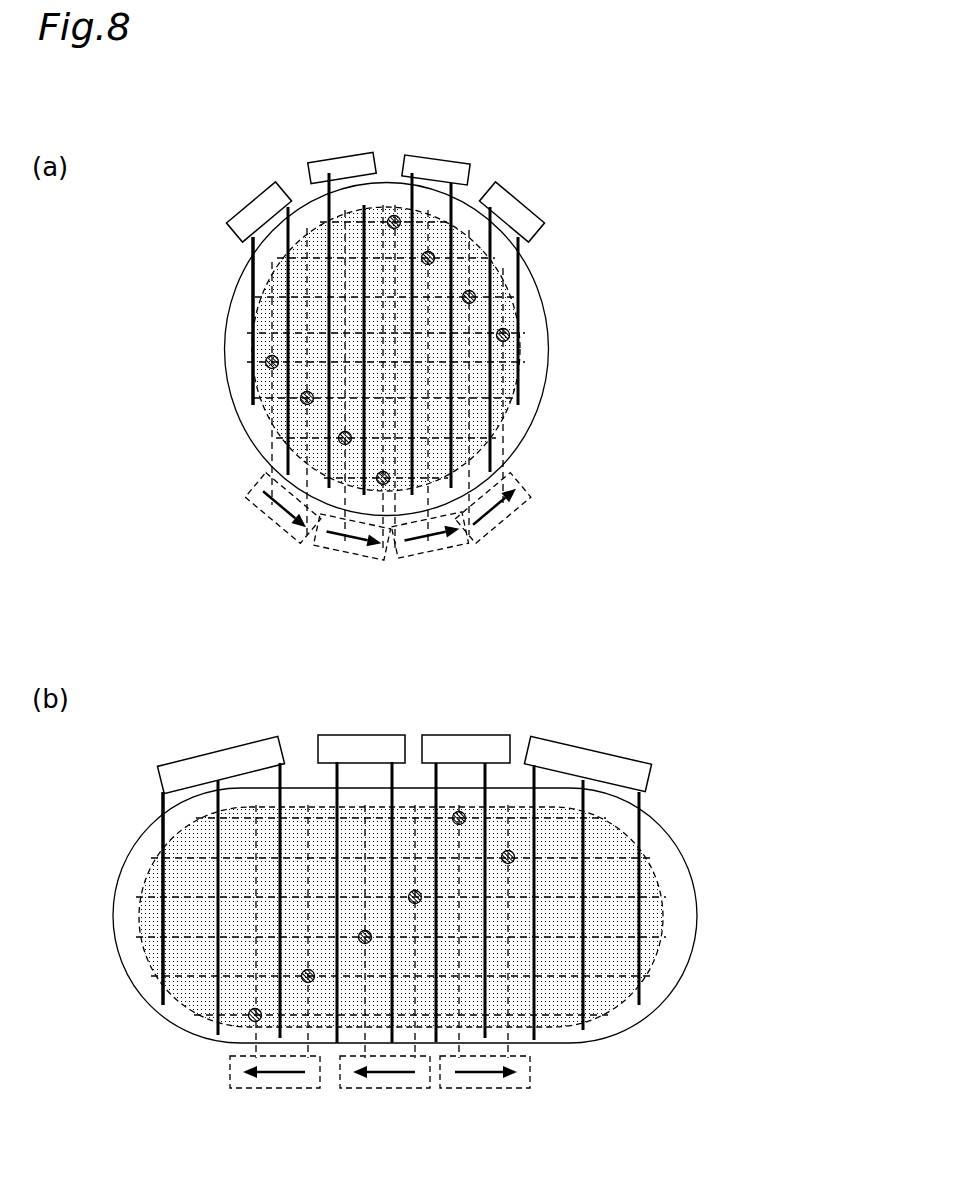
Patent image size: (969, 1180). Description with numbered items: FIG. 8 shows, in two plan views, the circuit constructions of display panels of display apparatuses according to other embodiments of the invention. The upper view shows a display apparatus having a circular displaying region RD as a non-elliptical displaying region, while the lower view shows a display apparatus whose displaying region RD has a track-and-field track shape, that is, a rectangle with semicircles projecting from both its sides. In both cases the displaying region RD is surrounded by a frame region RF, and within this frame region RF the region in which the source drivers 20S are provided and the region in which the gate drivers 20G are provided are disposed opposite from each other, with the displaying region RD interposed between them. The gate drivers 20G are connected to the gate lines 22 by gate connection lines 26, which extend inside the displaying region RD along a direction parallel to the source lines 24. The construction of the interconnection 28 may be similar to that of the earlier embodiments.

The source drivers 20S is at (523, 200).
The gate drivers 20G is at (518, 504).
The gate lines 22 is at (437, 296).
The source lines 24 is at (520, 400).
The gate connection lines 26 is at (526, 350).
The interconnection 28 is at (266, 356).
The displaying region RD is at (250, 342).
The frame region RF is at (549, 338).